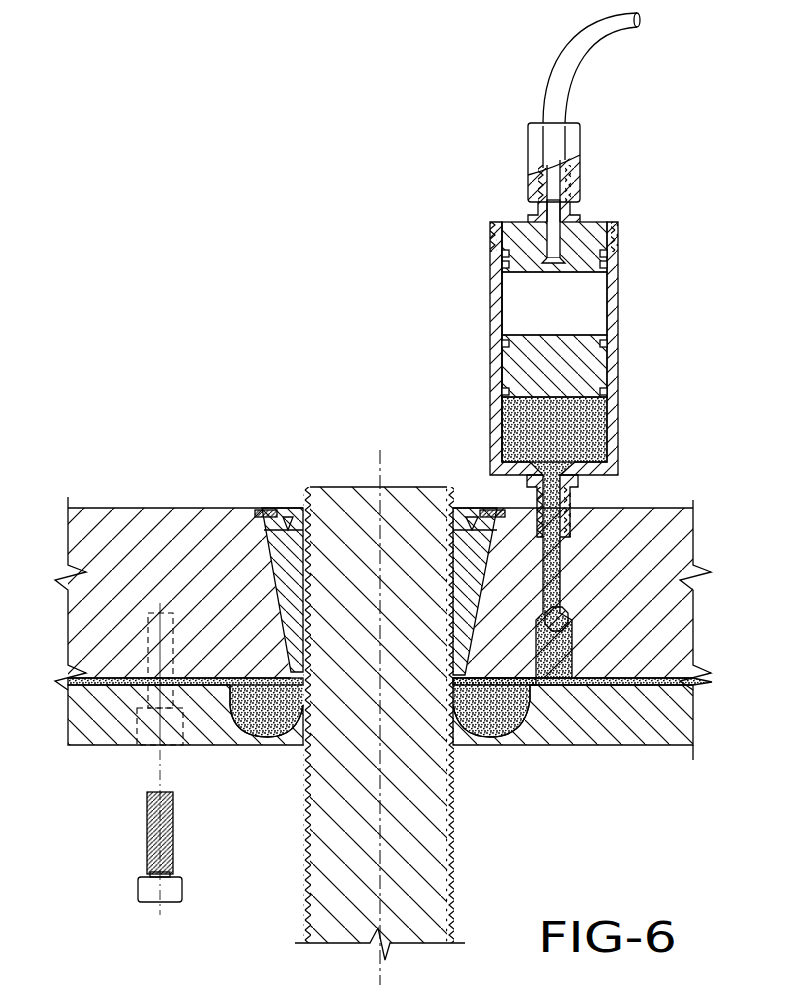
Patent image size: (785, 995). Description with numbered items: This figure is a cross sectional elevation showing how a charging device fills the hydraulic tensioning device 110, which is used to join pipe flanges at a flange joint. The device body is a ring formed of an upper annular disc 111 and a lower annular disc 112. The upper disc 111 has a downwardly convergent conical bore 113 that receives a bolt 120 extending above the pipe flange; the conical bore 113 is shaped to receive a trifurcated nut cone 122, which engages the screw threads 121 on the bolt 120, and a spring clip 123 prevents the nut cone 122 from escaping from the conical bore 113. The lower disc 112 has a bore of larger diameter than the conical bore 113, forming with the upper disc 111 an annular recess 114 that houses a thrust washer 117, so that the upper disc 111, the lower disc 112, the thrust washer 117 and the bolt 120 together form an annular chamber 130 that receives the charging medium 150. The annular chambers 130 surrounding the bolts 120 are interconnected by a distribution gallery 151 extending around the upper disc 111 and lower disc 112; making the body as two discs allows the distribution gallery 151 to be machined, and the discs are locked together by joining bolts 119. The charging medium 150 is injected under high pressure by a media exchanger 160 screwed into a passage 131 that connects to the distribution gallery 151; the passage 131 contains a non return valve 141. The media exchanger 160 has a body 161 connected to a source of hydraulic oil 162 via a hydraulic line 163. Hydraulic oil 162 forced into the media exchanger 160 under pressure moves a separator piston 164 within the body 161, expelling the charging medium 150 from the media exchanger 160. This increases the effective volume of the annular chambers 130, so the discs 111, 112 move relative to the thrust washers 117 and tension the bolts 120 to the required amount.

The hydraulic tensioning device 110 is at (215, 508).
The upper annular disc 111 is at (117, 508).
The lower annular disc 112 is at (118, 725).
The conical bore 113 is at (269, 562).
The annular recess 114 is at (277, 687).
The thrust washer 117 is at (300, 733).
The joining bolt 119 is at (150, 903).
The bolt 120 is at (343, 846).
The screw threads 121 is at (455, 857).
The trifurcated nut cone 122 is at (297, 585).
The spring clip 123 is at (480, 520).
The annular chamber 130 is at (258, 730).
The passage 131 is at (557, 563).
The non return valve 141 is at (563, 620).
The charging medium 150 is at (582, 437).
The distribution gallery 151 is at (653, 681).
The media exchanger 160 is at (492, 262).
The body 161 is at (497, 315).
The hydraulic oil 162 is at (578, 300).
The hydraulic line 163 is at (565, 77).
The separator piston 164 is at (575, 373).